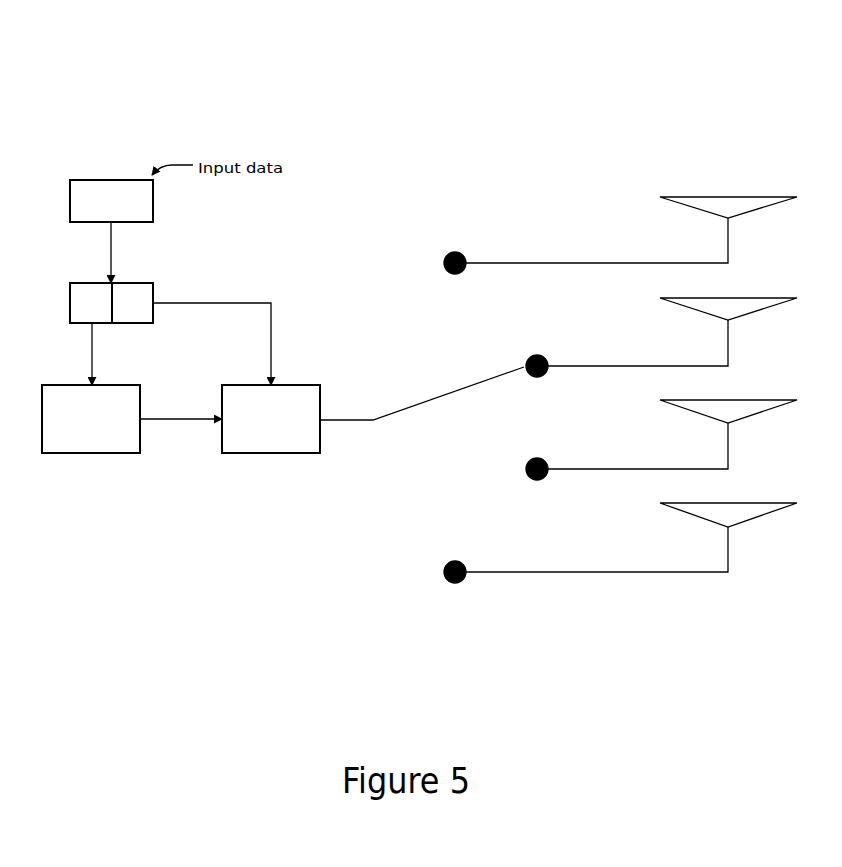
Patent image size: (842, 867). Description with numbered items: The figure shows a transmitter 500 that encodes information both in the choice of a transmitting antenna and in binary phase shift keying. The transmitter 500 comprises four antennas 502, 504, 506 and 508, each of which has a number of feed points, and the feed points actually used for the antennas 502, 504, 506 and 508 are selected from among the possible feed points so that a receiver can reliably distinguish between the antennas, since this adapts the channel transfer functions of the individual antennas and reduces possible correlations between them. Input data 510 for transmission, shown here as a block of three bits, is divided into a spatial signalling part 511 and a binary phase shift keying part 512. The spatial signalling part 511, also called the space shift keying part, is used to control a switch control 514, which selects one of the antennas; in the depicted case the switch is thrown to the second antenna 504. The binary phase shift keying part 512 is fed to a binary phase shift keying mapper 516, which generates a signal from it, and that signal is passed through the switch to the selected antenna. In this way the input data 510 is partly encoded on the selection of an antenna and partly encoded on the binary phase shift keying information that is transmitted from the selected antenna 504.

The transmitter 500 is at (426, 135).
The antenna 502 is at (724, 197).
The antenna 504 is at (650, 302).
The antenna 506 is at (682, 420).
The antenna 508 is at (745, 528).
The input data 510 is at (125, 182).
The spatial signalling part 511 is at (160, 282).
The binary phase shift keying part 512 is at (72, 281).
The switch control 514 is at (263, 460).
The binary phase shift keying mapper 516 is at (113, 453).